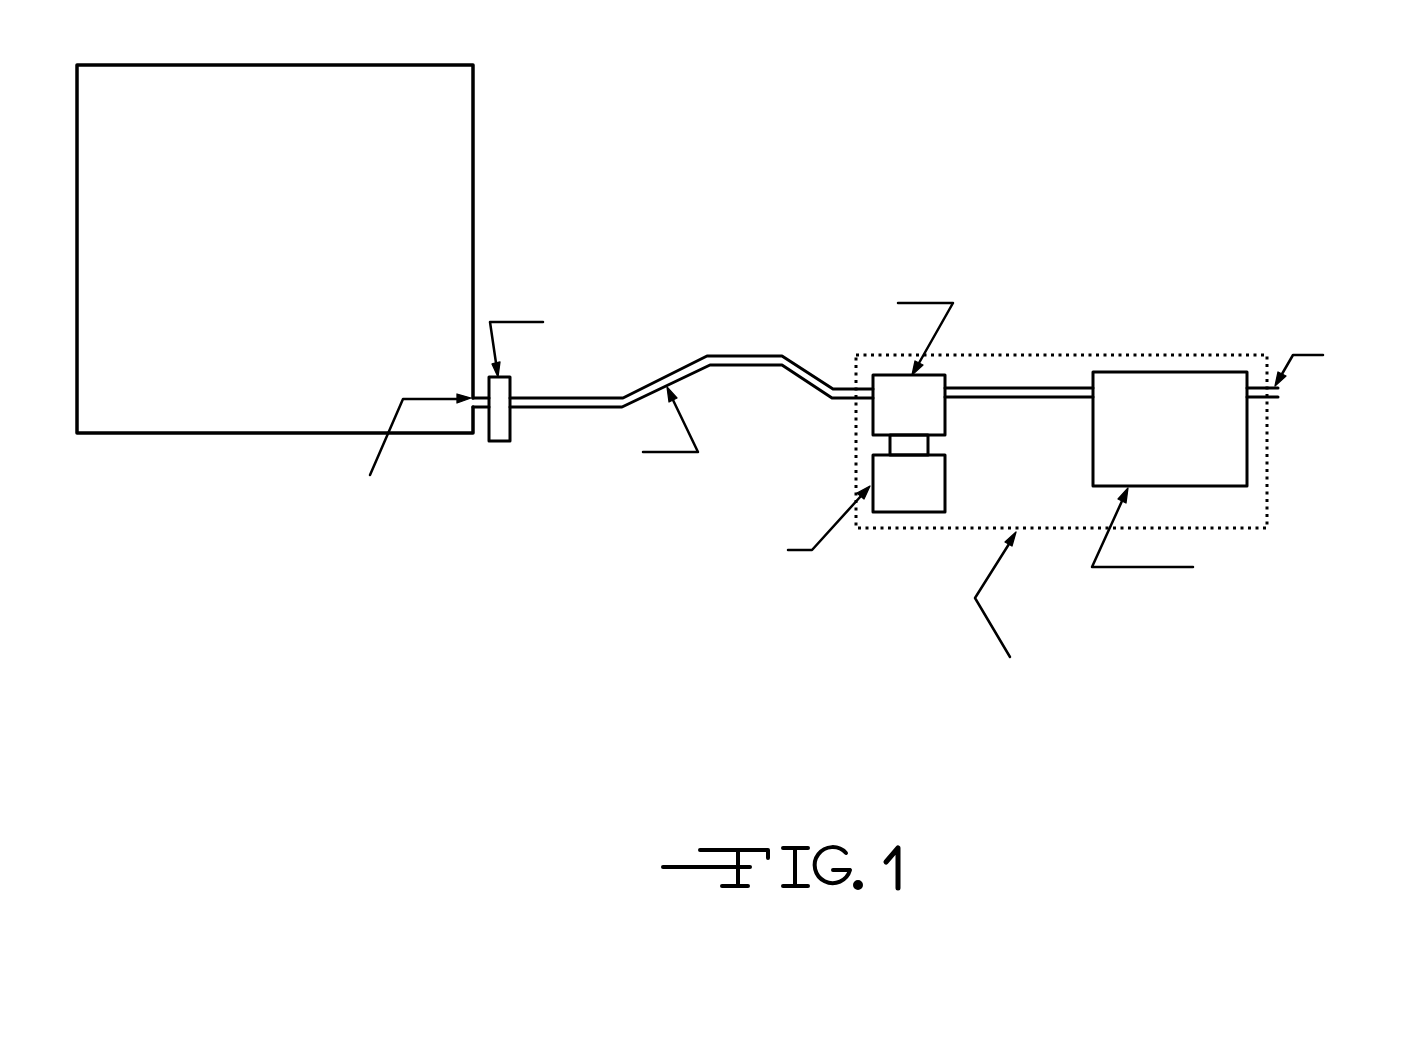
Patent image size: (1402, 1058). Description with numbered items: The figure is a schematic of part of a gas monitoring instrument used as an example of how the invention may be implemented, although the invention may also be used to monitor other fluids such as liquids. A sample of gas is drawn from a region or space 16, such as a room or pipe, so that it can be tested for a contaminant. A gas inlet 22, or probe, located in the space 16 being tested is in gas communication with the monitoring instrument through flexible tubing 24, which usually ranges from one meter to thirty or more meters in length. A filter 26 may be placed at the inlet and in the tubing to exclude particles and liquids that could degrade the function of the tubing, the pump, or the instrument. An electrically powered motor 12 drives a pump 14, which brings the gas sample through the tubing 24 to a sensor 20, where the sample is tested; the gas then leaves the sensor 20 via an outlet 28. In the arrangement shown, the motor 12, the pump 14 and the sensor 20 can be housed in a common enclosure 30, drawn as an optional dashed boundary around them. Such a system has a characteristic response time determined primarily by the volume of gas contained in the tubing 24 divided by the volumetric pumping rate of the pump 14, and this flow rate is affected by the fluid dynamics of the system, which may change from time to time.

The electrically powered motor 12 is at (888, 514).
The pump 14 is at (938, 375).
The space 16 is at (243, 273).
The sensor 20 is at (1093, 456).
The gas inlet 22 is at (468, 398).
The flexible tubing 24 is at (687, 378).
The filter 26 is at (512, 388).
The outlet 28 is at (1273, 398).
The common enclosure 30 is at (944, 531).